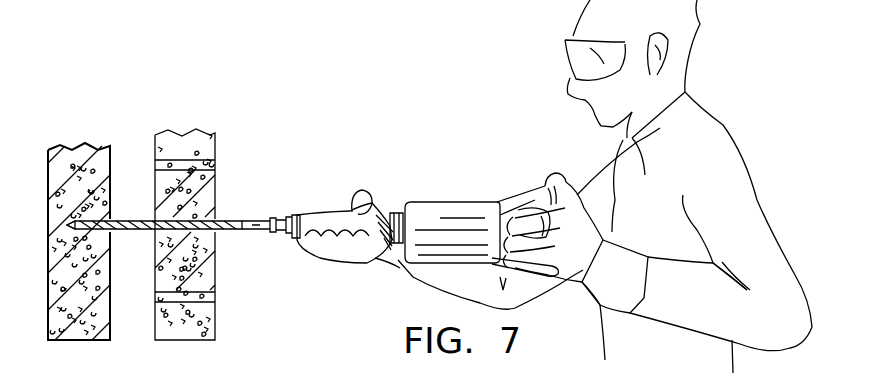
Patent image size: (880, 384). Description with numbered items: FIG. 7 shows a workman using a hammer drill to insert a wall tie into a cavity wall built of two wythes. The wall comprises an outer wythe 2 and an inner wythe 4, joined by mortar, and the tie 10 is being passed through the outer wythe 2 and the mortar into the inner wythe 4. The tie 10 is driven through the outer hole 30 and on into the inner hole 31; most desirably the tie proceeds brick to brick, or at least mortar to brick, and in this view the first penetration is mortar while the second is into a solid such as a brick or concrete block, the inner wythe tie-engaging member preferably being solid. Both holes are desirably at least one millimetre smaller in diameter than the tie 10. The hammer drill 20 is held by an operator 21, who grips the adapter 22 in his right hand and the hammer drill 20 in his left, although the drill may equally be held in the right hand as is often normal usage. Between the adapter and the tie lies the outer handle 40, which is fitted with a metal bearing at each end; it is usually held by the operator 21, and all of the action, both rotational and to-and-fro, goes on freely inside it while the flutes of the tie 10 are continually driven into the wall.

The outer wythe 2 is at (203, 128).
The inner wythe 4 is at (88, 146).
The tie 10 is at (232, 218).
The hammer drill 20 is at (465, 196).
The operator 21 is at (723, 125).
The adapter 22 is at (334, 211).
The outer hole 30 is at (228, 218).
The inner hole 31 is at (102, 220).
The outer handle 40 is at (316, 208).